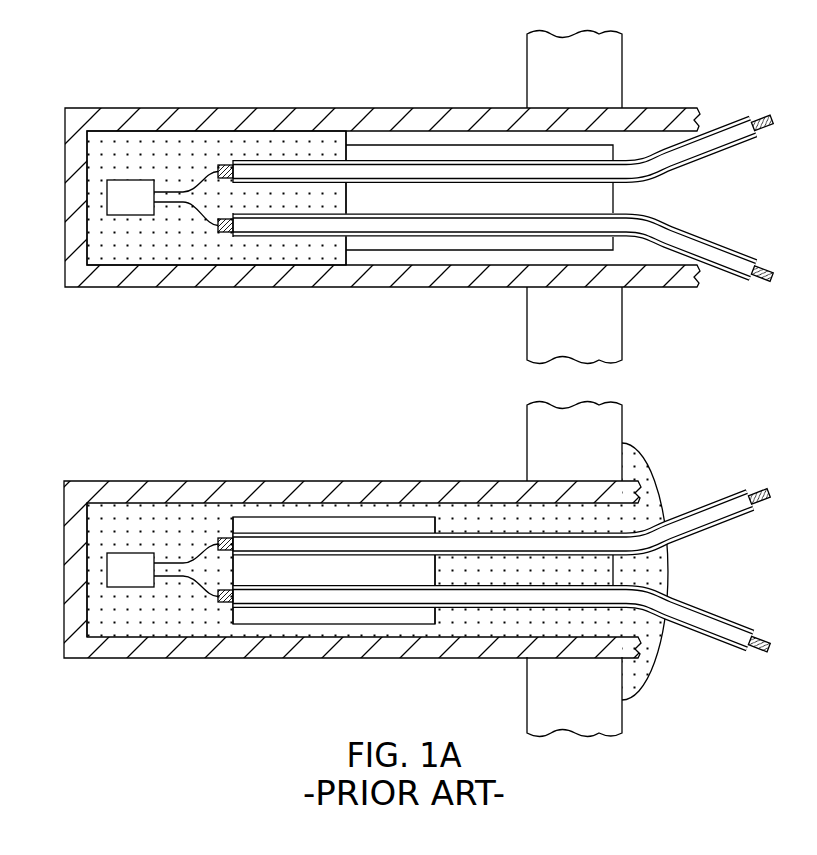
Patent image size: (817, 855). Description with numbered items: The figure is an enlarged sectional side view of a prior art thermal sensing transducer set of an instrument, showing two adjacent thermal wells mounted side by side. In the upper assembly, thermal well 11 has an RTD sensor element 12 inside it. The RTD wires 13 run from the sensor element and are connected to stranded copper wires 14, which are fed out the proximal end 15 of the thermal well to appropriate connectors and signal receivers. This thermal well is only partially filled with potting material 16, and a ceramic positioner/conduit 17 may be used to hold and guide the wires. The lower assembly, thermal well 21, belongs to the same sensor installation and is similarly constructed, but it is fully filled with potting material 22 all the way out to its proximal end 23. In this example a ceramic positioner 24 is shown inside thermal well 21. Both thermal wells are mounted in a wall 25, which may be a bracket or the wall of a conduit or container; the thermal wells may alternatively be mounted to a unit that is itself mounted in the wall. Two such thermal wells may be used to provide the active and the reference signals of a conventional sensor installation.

The thermal well 11 is at (348, 108).
The RTD sensor element 12 is at (131, 187).
The RTD wires 13 is at (186, 188).
The stranded copper wires 14 is at (407, 172).
The proximal end 15 is at (419, 197).
The potting material 16 is at (290, 195).
The ceramic positioner/conduit 17 is at (467, 152).
The thermal well 21 is at (233, 480).
The potting material 22 is at (157, 518).
The proximal end 23 is at (660, 487).
The ceramic positioner 24 is at (352, 522).
The wall 25 is at (613, 428).